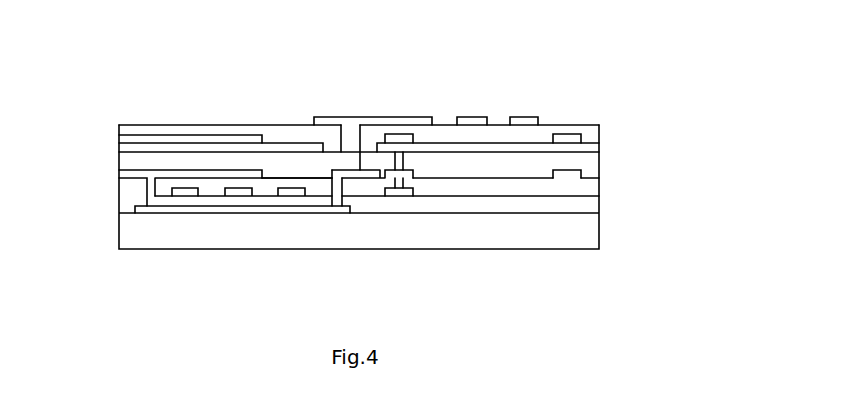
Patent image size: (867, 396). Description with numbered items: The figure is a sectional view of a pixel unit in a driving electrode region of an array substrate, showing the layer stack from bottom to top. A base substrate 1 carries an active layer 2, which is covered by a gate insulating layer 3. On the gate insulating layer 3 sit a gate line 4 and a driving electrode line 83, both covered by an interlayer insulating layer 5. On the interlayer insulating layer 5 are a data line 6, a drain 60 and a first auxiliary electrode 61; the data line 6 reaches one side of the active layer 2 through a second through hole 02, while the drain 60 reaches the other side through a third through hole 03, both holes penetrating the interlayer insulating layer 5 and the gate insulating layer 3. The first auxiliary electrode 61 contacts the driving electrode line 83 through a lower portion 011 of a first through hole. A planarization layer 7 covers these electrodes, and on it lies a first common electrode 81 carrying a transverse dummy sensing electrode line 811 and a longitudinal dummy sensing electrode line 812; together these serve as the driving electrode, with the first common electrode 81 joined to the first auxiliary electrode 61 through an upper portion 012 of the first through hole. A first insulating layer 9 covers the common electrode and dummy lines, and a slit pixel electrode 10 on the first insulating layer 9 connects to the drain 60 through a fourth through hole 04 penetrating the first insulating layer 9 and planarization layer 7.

The base substrate 1 is at (600, 232).
The active layer 2 is at (221, 214).
The gate insulating layer 3 is at (600, 210).
The gate line 4 is at (243, 196).
The interlayer insulating layer 5 is at (600, 188).
The data line 6 is at (167, 170).
The planarization layer 7 is at (600, 163).
The first insulating layer 9 is at (600, 135).
The pixel electrode 10 is at (400, 133).
The second through hole 02 is at (143, 188).
The third through hole 03 is at (340, 186).
The fourth through hole 04 is at (351, 152).
The lower portion of first through hole 011 is at (399, 179).
The upper portion of first through hole 012 is at (400, 162).
The drain 60 is at (325, 177).
The first auxiliary electrode 61 is at (394, 178).
The first common electrode 81 is at (486, 142).
The transverse dummy sensing electrode line 811 is at (407, 134).
The longitudinal dummy sensing electrode line 812 is at (172, 135).
The driving electrode line 83 is at (182, 197).